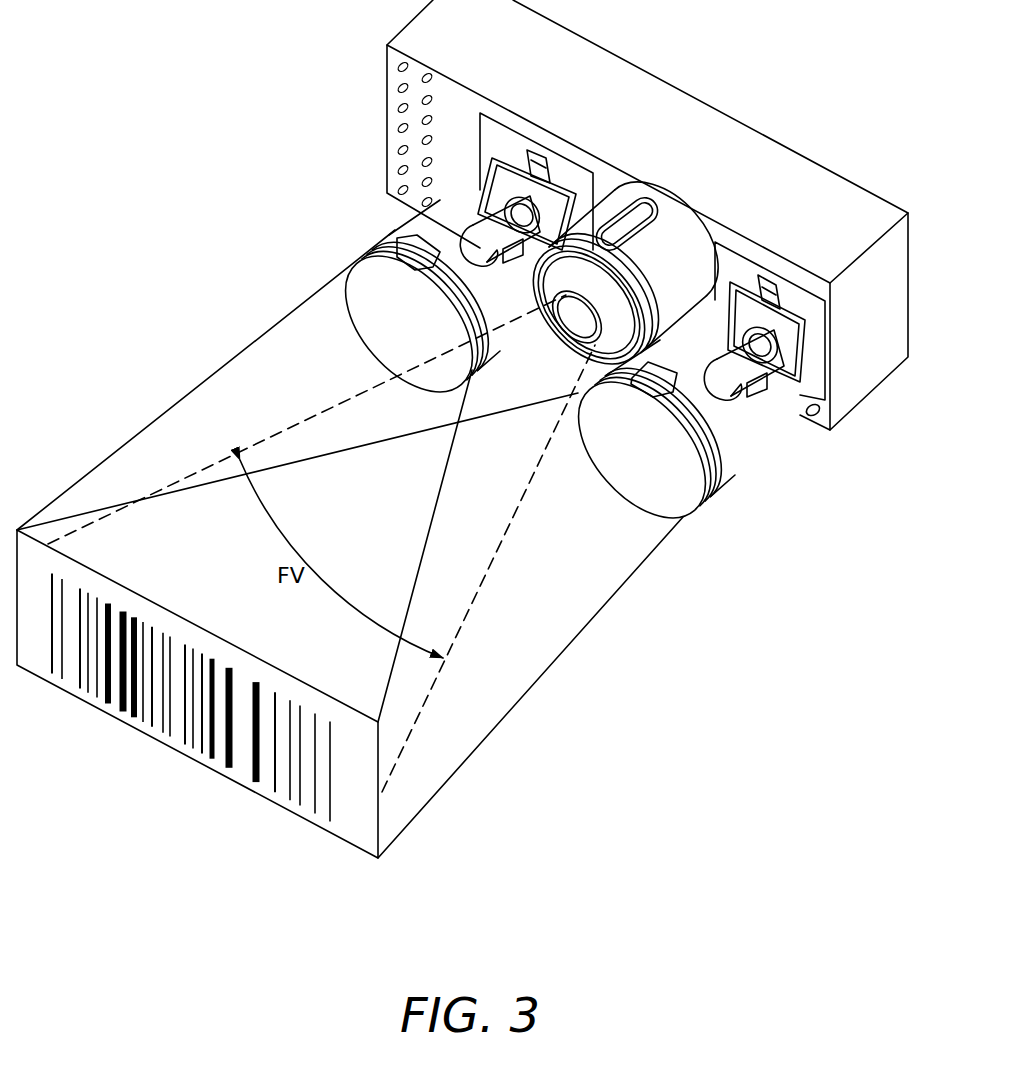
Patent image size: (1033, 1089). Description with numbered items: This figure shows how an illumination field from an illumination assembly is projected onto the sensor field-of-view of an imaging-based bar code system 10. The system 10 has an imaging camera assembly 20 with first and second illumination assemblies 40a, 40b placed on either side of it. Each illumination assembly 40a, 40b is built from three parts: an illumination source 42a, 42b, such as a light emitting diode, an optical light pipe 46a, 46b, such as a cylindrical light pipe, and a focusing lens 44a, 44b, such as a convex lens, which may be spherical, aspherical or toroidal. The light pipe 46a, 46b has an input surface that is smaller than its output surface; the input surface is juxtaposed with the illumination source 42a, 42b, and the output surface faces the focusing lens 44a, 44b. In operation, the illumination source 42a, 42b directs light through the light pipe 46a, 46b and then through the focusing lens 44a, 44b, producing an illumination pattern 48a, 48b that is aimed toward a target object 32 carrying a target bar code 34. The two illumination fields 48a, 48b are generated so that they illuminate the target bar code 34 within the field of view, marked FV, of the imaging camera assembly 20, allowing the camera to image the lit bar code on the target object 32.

The imaging-based bar code system 10 is at (768, 58).
The imaging camera assembly 20 is at (674, 226).
The target object 32 is at (300, 822).
The target bar code 34 is at (132, 717).
The first illumination assembly 40a is at (380, 226).
The second illumination assembly 40b is at (748, 470).
The illumination source 42a is at (523, 213).
The illumination source 42b is at (758, 323).
The focusing lens 44a is at (490, 245).
The focusing lens 44b is at (717, 380).
The optical light pipe 46a is at (505, 222).
The optical light pipe 46b is at (740, 347).
The illumination pattern 48a is at (243, 362).
The illumination pattern 48b is at (520, 688).